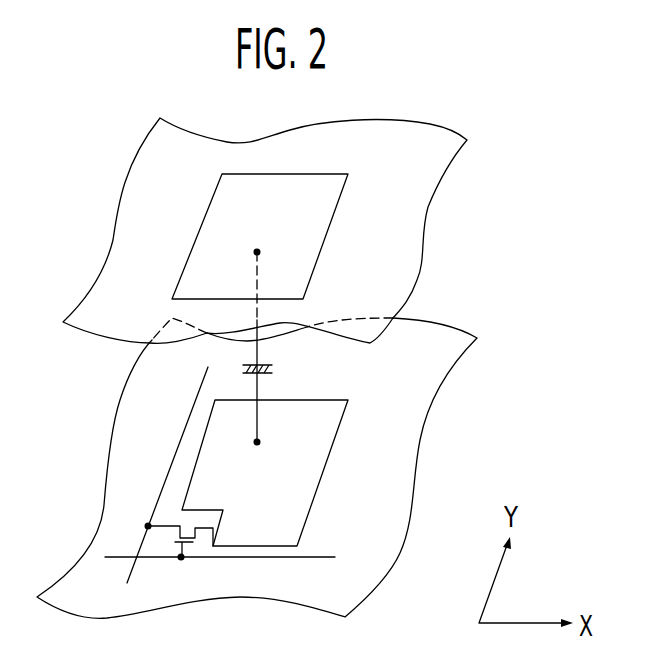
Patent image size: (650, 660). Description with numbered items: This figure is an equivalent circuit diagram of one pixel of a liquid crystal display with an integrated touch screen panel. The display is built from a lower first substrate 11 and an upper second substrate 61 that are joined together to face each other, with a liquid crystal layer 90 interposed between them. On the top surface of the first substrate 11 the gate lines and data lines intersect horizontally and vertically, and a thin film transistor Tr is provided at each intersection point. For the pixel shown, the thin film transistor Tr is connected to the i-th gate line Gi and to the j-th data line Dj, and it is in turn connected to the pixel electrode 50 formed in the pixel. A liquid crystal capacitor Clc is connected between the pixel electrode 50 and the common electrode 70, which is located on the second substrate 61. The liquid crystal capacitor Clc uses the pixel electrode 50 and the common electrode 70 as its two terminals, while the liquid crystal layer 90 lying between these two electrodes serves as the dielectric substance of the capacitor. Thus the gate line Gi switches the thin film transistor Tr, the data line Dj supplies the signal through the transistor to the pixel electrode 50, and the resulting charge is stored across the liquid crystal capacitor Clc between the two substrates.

The liquid crystal layer 90 is at (88, 377).
The second substrate 61 is at (426, 275).
The common electrode 70 is at (347, 189).
The first substrate 11 is at (440, 396).
The pixel electrode 50 is at (315, 500).
The j-th data line Dj is at (170, 462).
The i-th gate line Gi is at (218, 541).
The thin film transistor Tr is at (179, 558).
The liquid crystal capacitor Clc is at (274, 381).